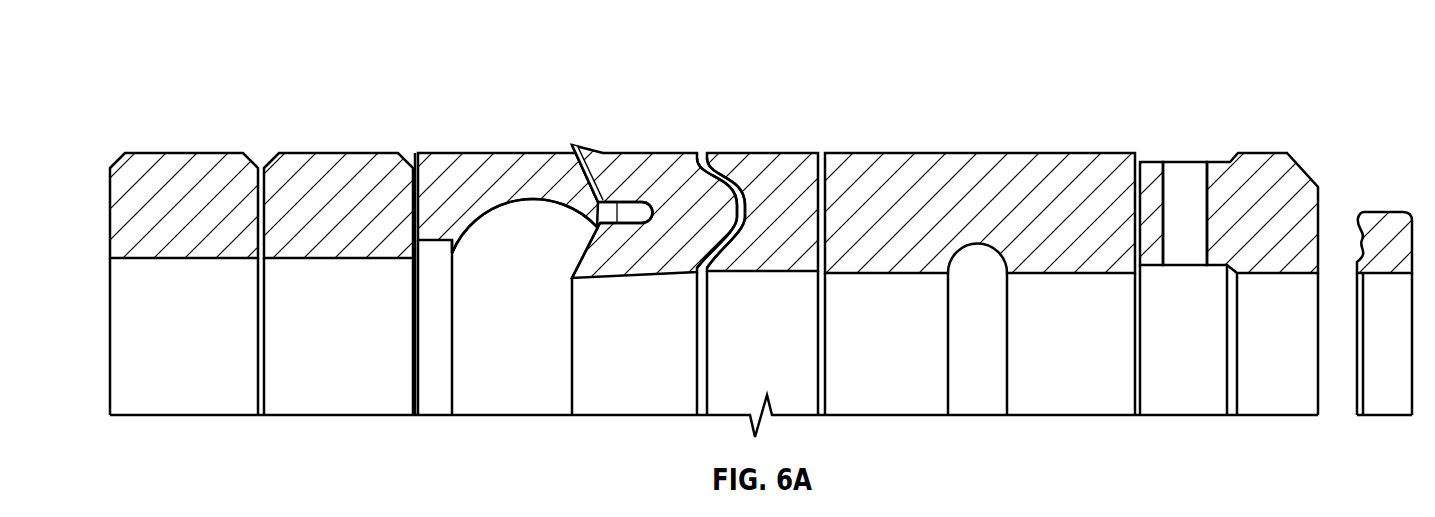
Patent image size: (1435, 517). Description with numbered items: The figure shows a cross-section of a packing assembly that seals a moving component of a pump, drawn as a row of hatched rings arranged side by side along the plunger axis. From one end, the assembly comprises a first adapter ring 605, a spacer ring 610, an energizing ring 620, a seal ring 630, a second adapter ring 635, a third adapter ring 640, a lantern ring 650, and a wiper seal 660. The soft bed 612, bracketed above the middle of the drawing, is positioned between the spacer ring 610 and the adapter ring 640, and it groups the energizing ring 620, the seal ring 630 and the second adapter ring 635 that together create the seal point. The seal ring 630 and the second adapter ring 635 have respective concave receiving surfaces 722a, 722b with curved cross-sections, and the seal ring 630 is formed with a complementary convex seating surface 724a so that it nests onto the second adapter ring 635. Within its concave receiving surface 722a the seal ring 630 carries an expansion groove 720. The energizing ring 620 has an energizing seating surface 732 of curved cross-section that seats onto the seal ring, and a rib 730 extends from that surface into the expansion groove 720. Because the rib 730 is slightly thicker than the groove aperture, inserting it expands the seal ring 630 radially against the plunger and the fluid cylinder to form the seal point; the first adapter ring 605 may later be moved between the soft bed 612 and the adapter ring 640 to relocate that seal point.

The first adapter ring 605 is at (168, 165).
The spacer ring 610 is at (313, 165).
The soft bed 612 is at (820, 52).
The energizing ring 620 is at (478, 158).
The seal ring 630 is at (662, 243).
The second adapter ring 635 is at (787, 160).
The third adapter ring 640 is at (980, 165).
The lantern ring 650 is at (1247, 160).
The wiper seal 660 is at (1380, 222).
The expansion groove 720 is at (655, 163).
The concave receiving surface 722a is at (592, 175).
The concave receiving surface 722b is at (768, 163).
The convex seating surface 724a is at (698, 160).
The rib 730 is at (513, 157).
The energizing seating surface 732 is at (603, 213).